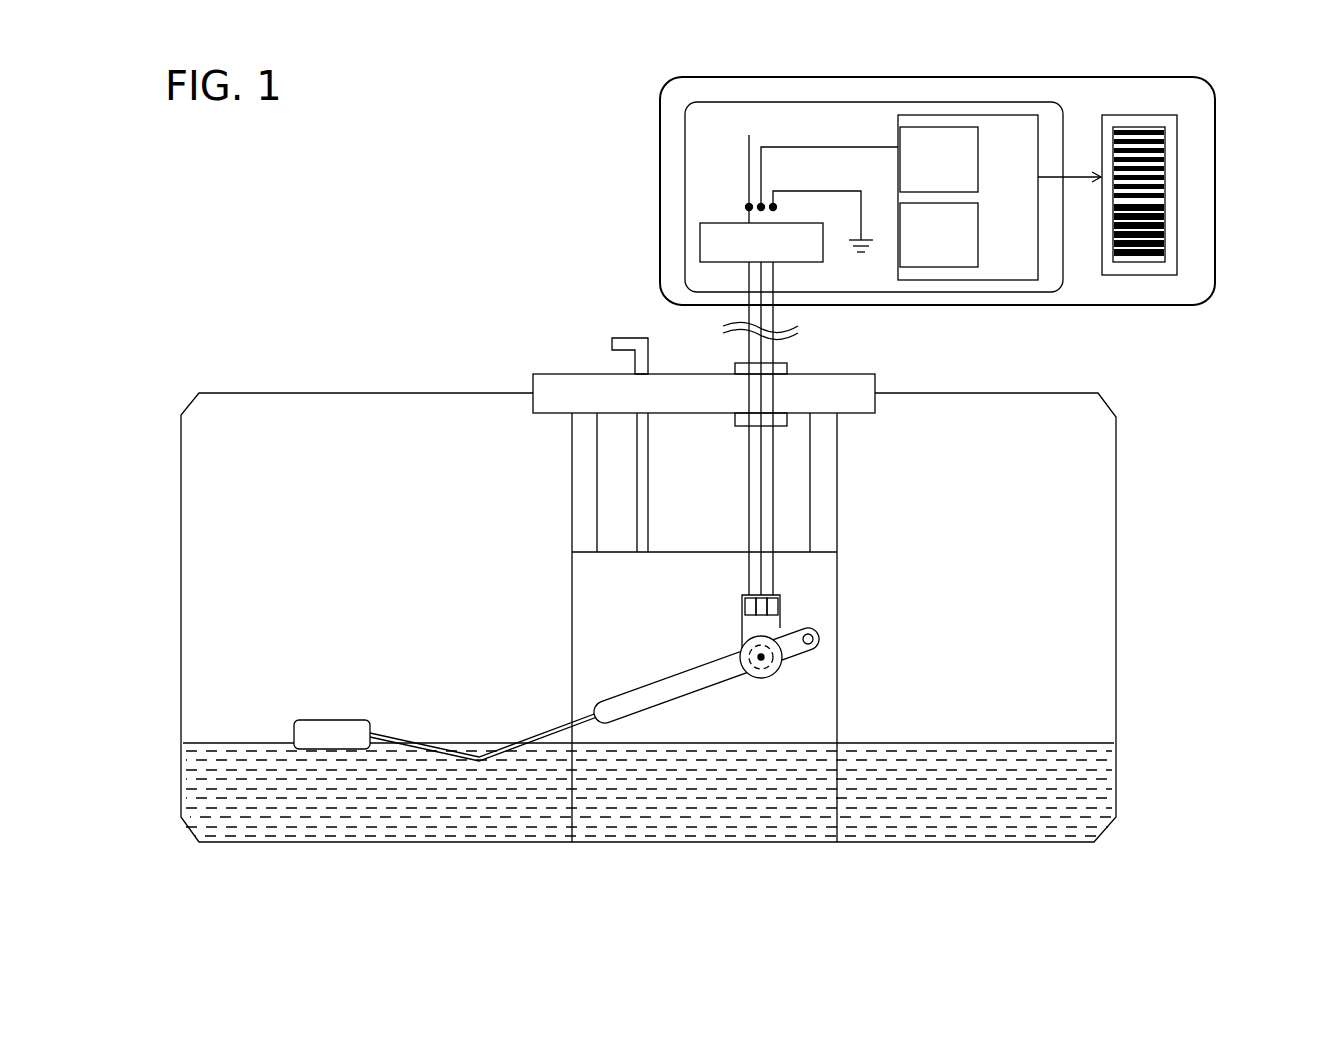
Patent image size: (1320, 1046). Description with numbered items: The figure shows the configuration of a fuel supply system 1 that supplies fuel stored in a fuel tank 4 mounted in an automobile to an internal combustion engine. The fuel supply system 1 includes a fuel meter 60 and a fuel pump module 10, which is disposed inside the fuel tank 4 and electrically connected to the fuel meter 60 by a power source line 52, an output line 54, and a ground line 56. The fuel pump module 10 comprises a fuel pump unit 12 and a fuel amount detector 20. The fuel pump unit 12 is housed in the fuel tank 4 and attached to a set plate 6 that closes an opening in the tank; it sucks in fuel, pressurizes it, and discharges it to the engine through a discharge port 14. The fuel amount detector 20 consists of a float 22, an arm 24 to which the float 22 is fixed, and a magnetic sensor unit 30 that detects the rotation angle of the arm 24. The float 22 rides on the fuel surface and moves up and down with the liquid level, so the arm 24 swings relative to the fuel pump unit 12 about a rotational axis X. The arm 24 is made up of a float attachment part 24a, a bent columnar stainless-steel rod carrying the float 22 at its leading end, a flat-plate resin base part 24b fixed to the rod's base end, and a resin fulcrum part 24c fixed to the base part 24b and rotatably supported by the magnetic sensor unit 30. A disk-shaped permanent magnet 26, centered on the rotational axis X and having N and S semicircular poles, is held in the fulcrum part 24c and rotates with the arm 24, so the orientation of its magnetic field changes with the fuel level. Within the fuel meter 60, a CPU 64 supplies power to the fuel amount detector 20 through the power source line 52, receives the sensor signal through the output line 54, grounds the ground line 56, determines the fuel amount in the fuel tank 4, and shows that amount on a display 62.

The fuel supply system 1 is at (498, 258).
The fuel tank 4 is at (1116, 640).
The set plate 6 is at (850, 385).
The fuel pump module 10 is at (564, 594).
The fuel pump unit 12 is at (590, 553).
The discharge port 14 is at (618, 338).
The fuel amount detector 20 is at (789, 720).
The float 22 is at (332, 725).
The arm 24 is at (563, 646).
The float attachment part 24a is at (538, 736).
The base part 24b is at (610, 701).
The fulcrum part 24c is at (743, 665).
The magnet 26 is at (769, 679).
The magnetic sensor unit 30 is at (780, 597).
The power source line 52 is at (748, 483).
The output line 54 is at (762, 470).
The ground line 56 is at (774, 498).
The fuel meter 60 is at (971, 214).
The display 62 is at (1165, 175).
The CPU 64 is at (1008, 264).
The rotational axis X is at (761, 661).